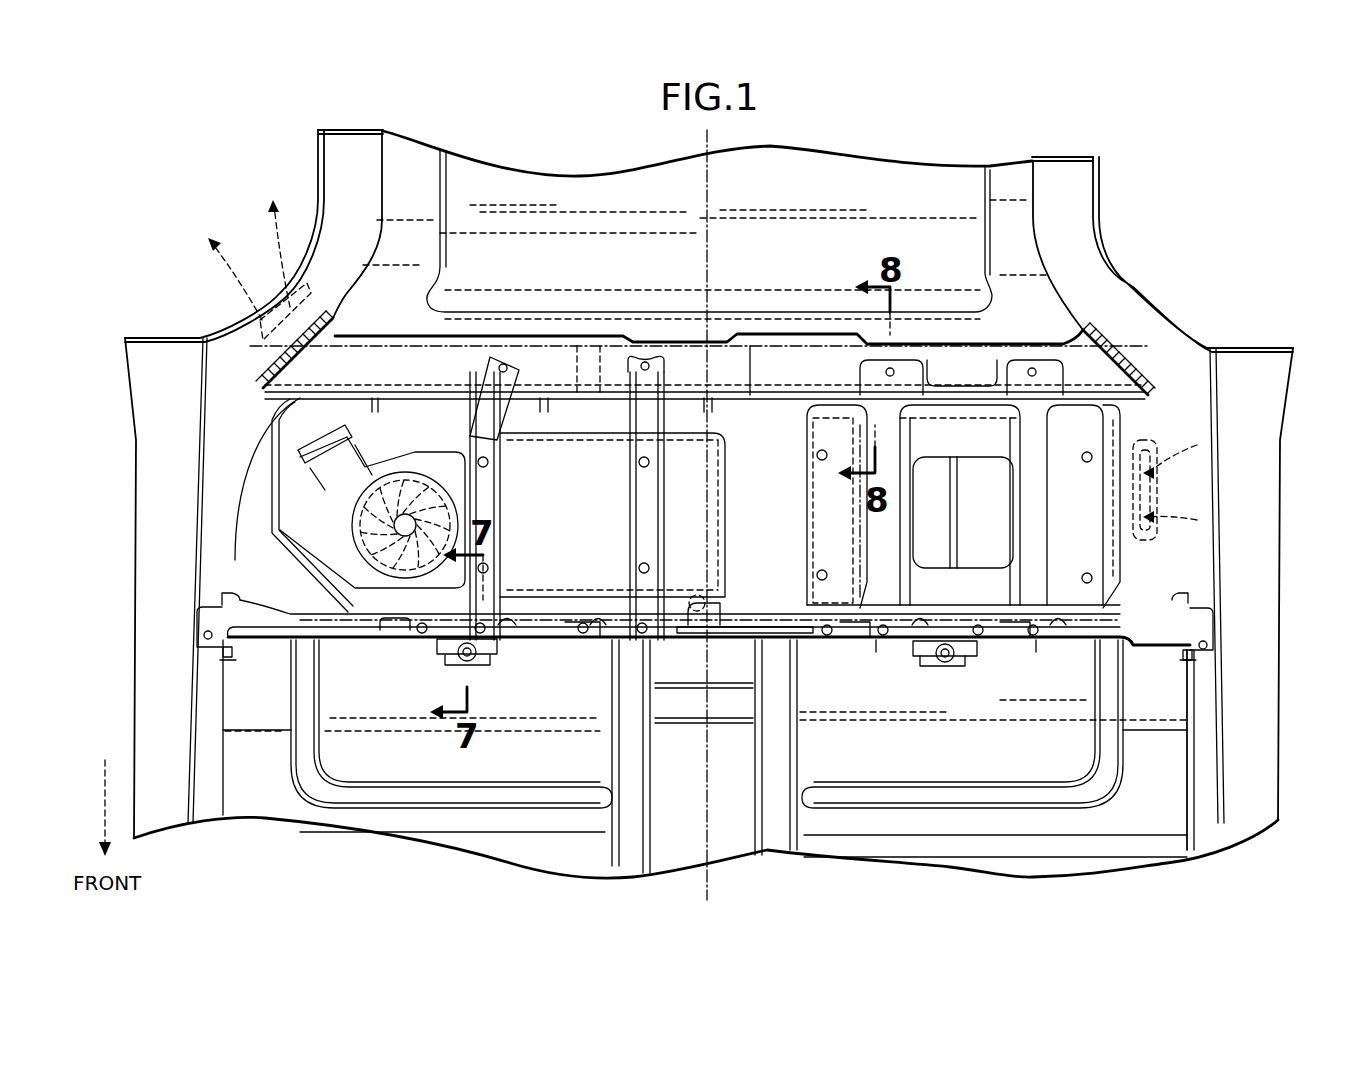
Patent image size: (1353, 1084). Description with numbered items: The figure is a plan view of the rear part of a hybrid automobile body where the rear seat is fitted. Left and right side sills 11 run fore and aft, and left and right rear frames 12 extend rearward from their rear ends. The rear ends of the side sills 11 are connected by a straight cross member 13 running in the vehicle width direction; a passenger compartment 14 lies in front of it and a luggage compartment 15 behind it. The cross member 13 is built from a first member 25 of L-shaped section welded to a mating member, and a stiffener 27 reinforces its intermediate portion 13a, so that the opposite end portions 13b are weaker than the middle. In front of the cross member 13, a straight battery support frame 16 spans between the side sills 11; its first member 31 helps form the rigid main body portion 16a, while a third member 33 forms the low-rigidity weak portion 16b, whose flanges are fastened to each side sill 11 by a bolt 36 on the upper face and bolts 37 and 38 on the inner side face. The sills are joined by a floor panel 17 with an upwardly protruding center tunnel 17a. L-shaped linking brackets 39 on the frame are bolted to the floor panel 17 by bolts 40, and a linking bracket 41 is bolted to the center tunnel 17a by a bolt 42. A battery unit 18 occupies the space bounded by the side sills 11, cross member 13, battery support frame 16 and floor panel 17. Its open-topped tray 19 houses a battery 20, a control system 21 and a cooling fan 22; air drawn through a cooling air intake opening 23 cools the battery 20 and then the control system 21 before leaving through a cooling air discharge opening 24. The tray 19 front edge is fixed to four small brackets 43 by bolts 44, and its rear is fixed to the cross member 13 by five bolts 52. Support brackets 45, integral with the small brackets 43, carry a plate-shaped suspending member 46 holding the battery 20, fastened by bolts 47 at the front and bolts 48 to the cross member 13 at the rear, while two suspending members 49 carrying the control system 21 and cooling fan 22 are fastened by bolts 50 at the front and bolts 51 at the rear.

The side sill 11 is at (153, 488).
The rear frame 12 is at (337, 165).
The cross member 13 is at (797, 332).
The intermediate portion 13a is at (577, 350).
The end portion 13b is at (340, 340).
The passenger compartment 14 is at (925, 777).
The luggage compartment 15 is at (776, 191).
The battery support frame 16 is at (757, 612).
The main body portion 16a is at (733, 650).
The weak portion 16b is at (258, 640).
The floor panel 17 is at (1195, 762).
The center tunnel 17a is at (665, 762).
The battery unit 18 is at (840, 652).
The tray 19 is at (270, 475).
The battery 20 is at (805, 480).
The control system 21 is at (726, 494).
The cooling fan 22 is at (407, 455).
The cooling air intake opening 23 is at (1185, 432).
The cooling air discharge opening 24 is at (285, 305).
The first member 25 is at (750, 353).
The stiffener 27 is at (600, 343).
The first member 31 is at (773, 632).
The third member 33 is at (203, 617).
The bolt 36 is at (207, 638).
The bolt 37 is at (233, 598).
The bolt 38 is at (232, 662).
The linking bracket 39 is at (457, 662).
The bolt 40 is at (472, 661).
The linking bracket 41 is at (718, 610).
The bolt 42 is at (696, 596).
The small bracket 43 is at (395, 640).
The bolt 44 is at (422, 636).
The support bracket 45 is at (507, 620).
The suspending member 46 is at (950, 387).
The bolt 47 is at (880, 655).
The bolt 48 is at (886, 372).
The suspending member 49 is at (486, 508).
The bolt 50 is at (495, 652).
The bolt 51 is at (503, 364).
The bolt 52 is at (380, 402).